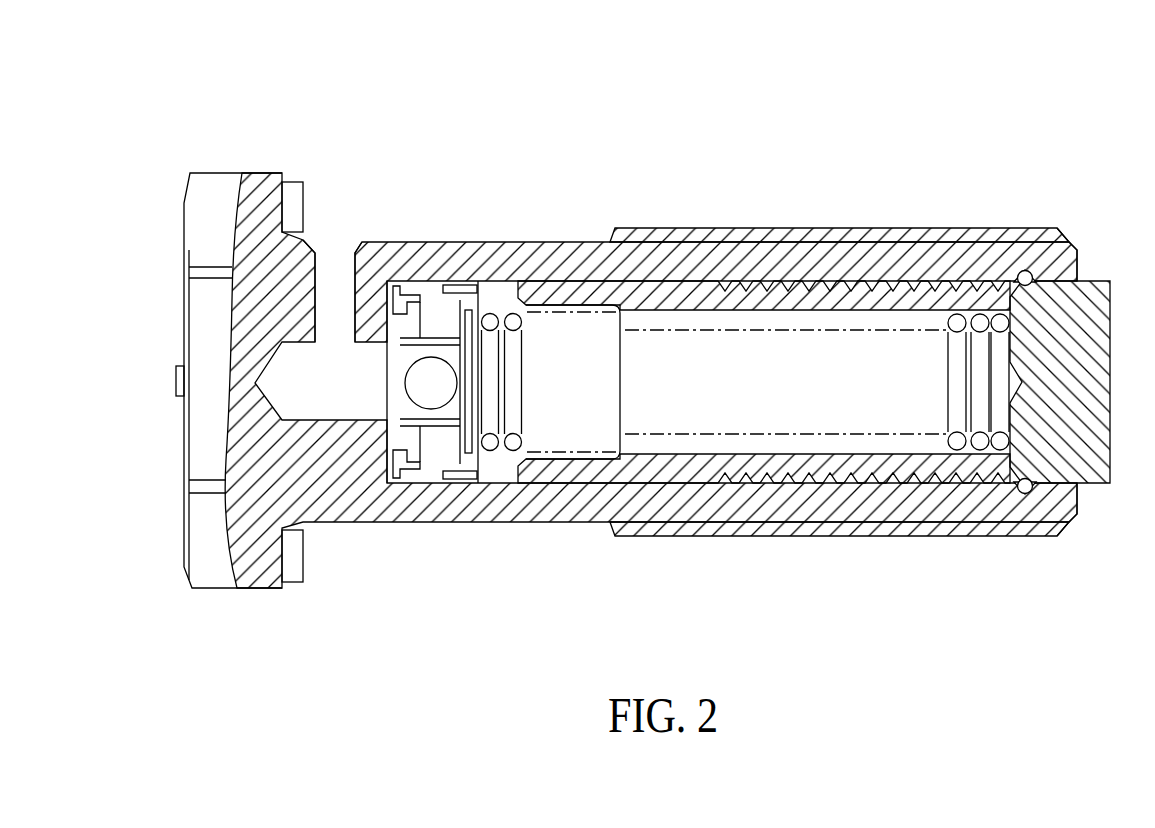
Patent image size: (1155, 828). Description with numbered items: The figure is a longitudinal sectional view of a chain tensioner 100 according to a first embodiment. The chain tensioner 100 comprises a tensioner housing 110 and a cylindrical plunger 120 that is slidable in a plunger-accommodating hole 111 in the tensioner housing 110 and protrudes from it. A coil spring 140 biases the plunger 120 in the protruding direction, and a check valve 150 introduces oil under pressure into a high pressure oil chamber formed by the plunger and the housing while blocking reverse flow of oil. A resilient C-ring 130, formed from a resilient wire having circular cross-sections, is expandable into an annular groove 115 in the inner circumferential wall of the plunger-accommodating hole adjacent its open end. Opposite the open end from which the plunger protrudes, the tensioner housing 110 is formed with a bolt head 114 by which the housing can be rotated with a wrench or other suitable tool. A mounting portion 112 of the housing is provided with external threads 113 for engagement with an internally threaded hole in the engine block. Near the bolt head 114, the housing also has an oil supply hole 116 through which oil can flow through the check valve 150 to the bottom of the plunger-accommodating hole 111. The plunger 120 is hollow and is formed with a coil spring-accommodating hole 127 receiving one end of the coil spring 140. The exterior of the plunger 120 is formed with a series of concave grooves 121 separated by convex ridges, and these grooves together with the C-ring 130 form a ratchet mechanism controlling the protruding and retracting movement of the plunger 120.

The chain tensioner 100 is at (758, 100).
The tensioner housing 110 is at (478, 500).
The plunger-accommodating hole 111 is at (483, 286).
The mounting portion 112 is at (550, 247).
The external threads 113 is at (824, 230).
The bolt head 114 is at (213, 575).
The annular groove 115 is at (1030, 246).
The oil supply hole 116 is at (333, 283).
The cylindrical plunger 120 is at (1097, 318).
The concave grooves 121 is at (920, 283).
The coil spring-accommodating hole 127 is at (772, 447).
The resilient C-ring 130 is at (1025, 490).
The coil spring 140 is at (514, 451).
The check valve 150 is at (432, 427).